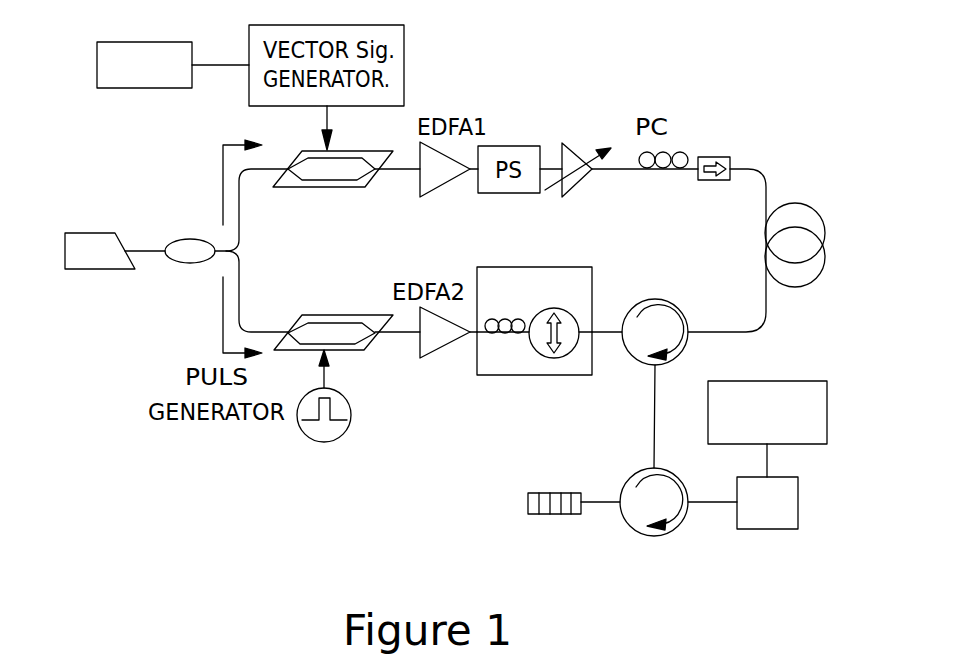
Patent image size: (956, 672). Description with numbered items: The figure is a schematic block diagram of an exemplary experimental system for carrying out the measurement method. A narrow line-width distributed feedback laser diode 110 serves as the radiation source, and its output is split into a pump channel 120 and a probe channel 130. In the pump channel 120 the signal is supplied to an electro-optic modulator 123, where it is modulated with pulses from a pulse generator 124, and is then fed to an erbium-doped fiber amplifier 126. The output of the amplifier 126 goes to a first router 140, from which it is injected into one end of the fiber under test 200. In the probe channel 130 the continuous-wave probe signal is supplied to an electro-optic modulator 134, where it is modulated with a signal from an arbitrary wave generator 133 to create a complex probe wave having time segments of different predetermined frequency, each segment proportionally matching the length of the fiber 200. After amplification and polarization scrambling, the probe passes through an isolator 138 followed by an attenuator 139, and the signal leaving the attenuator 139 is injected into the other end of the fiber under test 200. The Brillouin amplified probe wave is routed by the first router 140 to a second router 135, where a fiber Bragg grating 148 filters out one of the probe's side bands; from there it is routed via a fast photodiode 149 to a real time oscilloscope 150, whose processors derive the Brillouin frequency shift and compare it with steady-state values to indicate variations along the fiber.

The DFB laser diode 110 is at (90, 270).
The pump channel 120 is at (157, 343).
The electro-optic modulator 123 is at (372, 313).
The pulse generator 124 is at (352, 401).
The erbium-doped fiber amplifier 126 is at (450, 345).
The probe channel 130 is at (213, 124).
The arbitrary wave generator 133 is at (292, 188).
The electro-optic modulator 134 is at (162, 42).
The second circulator CIR2 135 is at (638, 468).
The isolator 138 is at (720, 157).
The attenuator 139 is at (580, 185).
The first router 140 is at (672, 307).
The fiber Bragg grating 148 is at (553, 516).
The fast photodiode 149 is at (799, 503).
The real time oscilloscope 150 is at (773, 381).
The fiber under test 200 is at (795, 204).